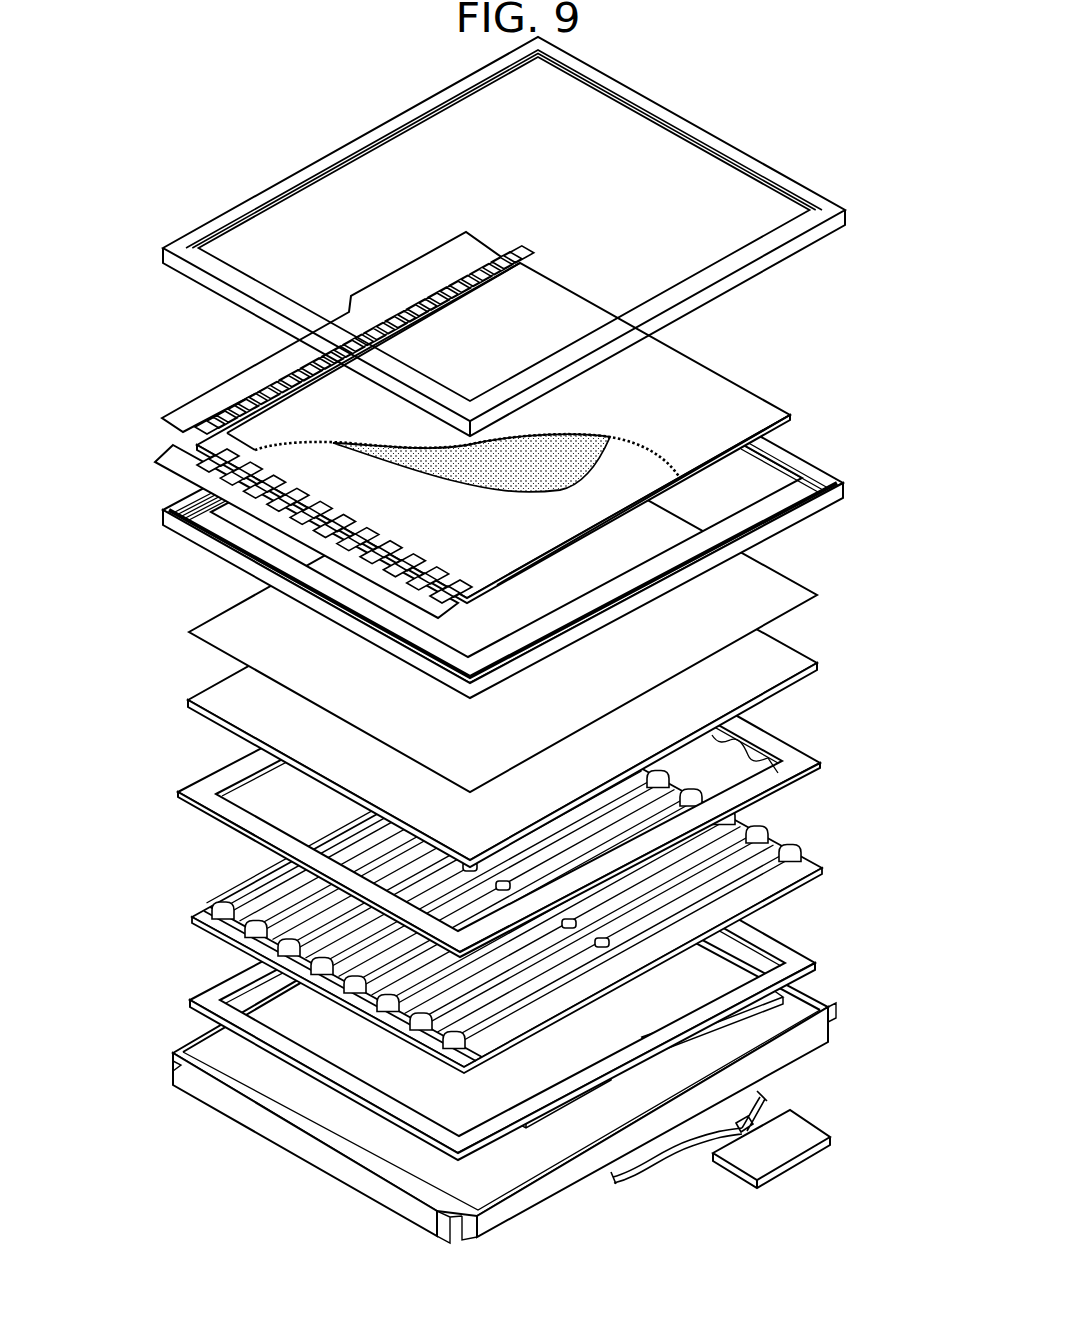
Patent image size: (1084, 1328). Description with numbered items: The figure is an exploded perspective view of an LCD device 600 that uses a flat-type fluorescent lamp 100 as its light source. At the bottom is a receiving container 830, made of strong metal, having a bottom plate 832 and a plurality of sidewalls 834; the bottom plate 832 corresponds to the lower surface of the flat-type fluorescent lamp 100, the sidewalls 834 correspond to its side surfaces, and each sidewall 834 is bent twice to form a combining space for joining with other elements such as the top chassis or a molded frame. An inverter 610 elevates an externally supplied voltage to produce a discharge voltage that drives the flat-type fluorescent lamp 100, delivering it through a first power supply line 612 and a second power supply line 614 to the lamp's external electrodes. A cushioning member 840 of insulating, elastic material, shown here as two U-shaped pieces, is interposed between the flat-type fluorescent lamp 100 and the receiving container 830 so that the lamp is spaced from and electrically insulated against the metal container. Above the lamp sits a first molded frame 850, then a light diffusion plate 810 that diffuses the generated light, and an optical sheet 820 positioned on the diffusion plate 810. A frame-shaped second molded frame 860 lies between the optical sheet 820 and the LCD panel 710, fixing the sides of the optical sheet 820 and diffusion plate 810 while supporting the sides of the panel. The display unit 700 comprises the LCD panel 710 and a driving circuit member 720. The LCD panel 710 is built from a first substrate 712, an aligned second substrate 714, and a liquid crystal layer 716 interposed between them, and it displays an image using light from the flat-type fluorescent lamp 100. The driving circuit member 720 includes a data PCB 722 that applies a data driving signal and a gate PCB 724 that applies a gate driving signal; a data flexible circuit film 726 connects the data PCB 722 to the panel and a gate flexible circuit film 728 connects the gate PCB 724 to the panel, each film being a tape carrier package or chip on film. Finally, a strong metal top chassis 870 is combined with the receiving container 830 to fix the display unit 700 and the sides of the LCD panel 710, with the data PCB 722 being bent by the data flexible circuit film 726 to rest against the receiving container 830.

The LCD device 600 is at (369, 93).
The top chassis 870 is at (217, 198).
The display unit 700 is at (472, 406).
The data printed circuit board 722 is at (370, 297).
The data flexible circuit film 726 is at (427, 290).
The LCD panel 710 is at (544, 433).
The first substrate 712 is at (560, 527).
The second substrate 714 is at (697, 452).
The liquid crystal layer 716 is at (582, 447).
The driving circuit member 720 is at (262, 519).
The gate PCB 724 is at (196, 470).
The gate flexible circuit film 728 is at (200, 500).
The second molded frame 860 is at (842, 512).
The optical sheet 820 is at (202, 615).
The light diffusion plate 810 is at (202, 685).
The first molded frame 850 is at (196, 770).
The flat-type fluorescent lamp 100 is at (198, 893).
The cushioning member 840 is at (198, 980).
The receiving container 830 is at (473, 1044).
The bottom plate 832 is at (292, 1095).
The sidewalls 834 is at (312, 1133).
The inverter 610 is at (770, 1156).
The first power supply line 612 is at (633, 1180).
The second power supply line 614 is at (762, 1097).